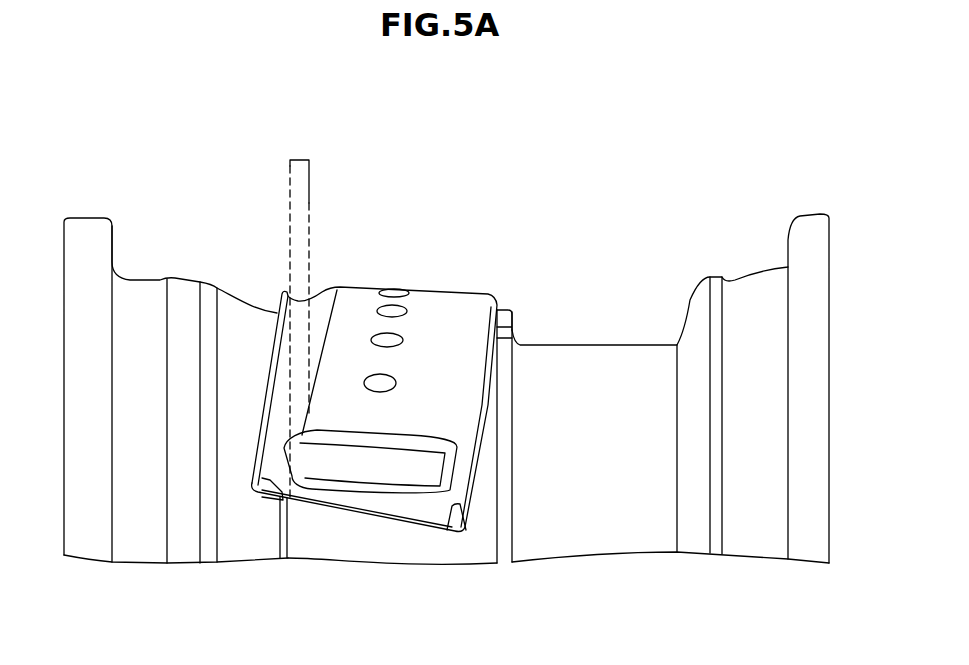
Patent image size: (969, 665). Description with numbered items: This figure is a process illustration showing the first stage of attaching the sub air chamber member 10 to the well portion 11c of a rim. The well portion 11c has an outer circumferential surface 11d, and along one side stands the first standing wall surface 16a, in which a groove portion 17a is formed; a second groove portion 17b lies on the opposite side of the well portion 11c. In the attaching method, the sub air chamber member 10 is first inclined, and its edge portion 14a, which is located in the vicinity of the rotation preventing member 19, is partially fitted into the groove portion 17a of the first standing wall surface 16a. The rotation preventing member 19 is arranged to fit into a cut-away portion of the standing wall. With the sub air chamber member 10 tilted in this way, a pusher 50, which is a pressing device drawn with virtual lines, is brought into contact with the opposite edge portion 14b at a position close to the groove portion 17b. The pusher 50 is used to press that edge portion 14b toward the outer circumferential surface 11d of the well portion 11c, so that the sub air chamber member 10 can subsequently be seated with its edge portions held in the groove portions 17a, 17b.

The sub air chamber member 10 is at (418, 278).
The well portion 11c is at (622, 513).
The outer circumferential surface 11d is at (364, 549).
The edge portion 14a is at (488, 448).
The edge portion 14b is at (283, 300).
The first standing wall surface 16a is at (497, 505).
The groove portion 17a is at (495, 546).
The groove portion 17b is at (291, 541).
The rotation preventing member 19 is at (517, 338).
The pusher 50 is at (309, 182).